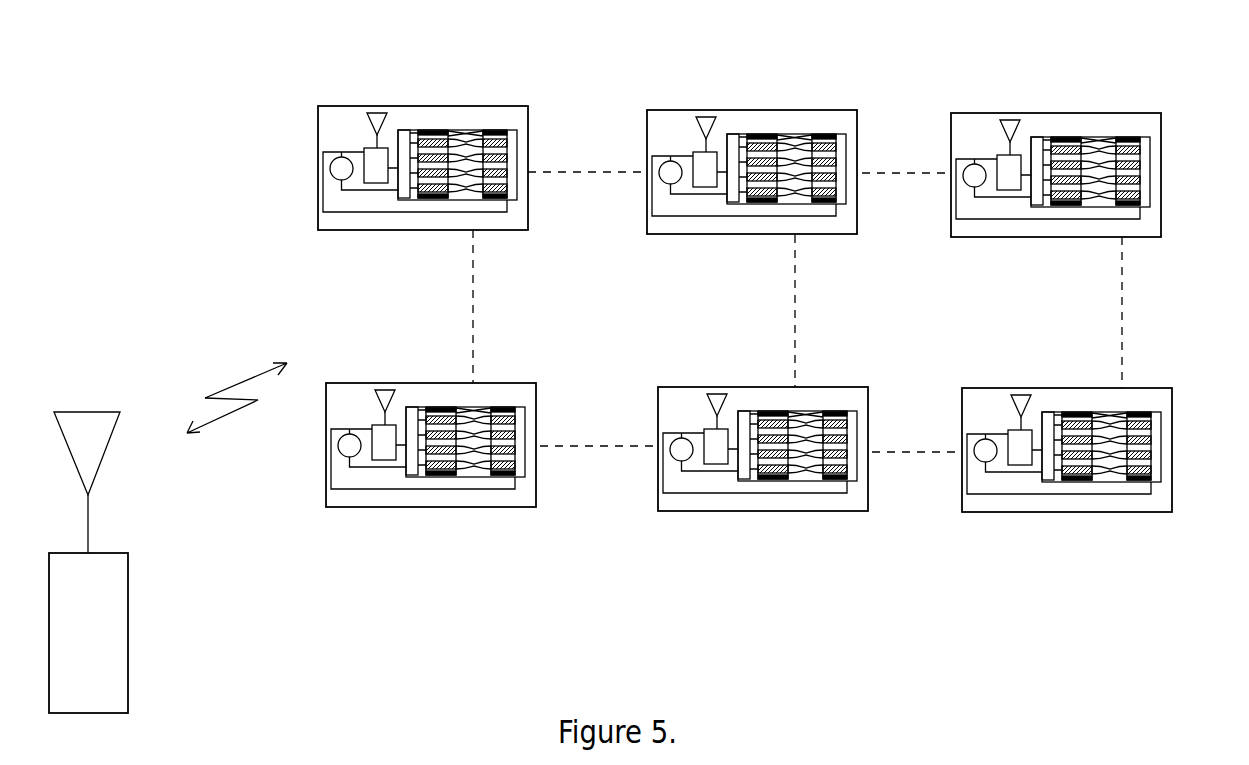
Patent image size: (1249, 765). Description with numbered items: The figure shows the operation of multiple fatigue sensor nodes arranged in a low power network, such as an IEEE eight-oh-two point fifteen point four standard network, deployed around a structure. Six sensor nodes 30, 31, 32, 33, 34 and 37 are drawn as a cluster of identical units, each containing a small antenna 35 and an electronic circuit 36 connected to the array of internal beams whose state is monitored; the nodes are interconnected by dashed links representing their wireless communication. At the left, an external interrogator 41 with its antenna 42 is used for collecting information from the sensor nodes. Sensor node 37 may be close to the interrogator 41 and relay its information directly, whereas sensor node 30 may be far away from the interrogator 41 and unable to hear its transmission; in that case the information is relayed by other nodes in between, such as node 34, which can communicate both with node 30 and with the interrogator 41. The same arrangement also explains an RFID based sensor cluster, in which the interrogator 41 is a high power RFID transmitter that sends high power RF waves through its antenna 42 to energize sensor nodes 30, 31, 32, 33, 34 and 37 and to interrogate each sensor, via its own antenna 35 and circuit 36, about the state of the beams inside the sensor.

The sensor node 30 is at (1085, 134).
The sensor node 31 is at (781, 131).
The sensor node 32 is at (452, 127).
The sensor node 33 is at (1096, 409).
The sensor node 34 is at (792, 408).
The antenna 35 is at (727, 231).
The transceiver circuit 36 is at (730, 355).
The sensor node 37 is at (460, 404).
The external interrogator 41 is at (140, 670).
The antenna 42 is at (103, 410).